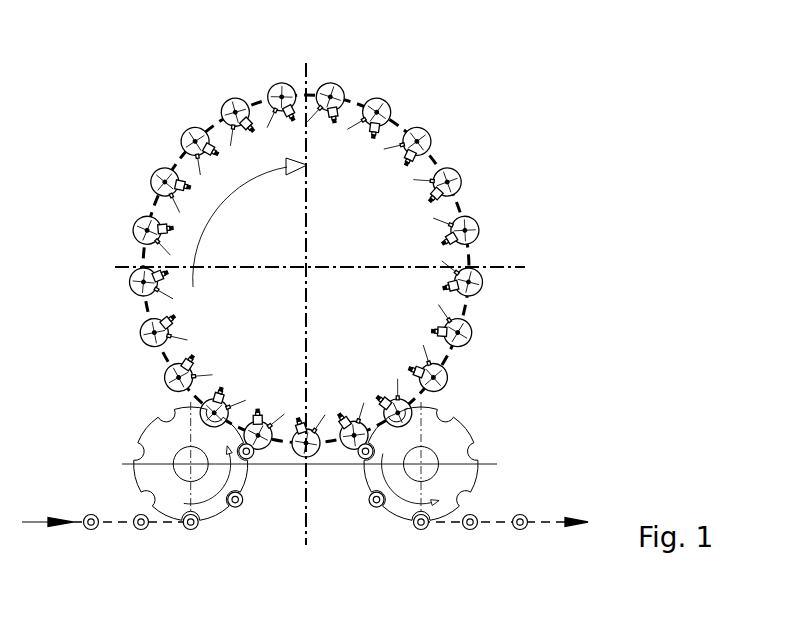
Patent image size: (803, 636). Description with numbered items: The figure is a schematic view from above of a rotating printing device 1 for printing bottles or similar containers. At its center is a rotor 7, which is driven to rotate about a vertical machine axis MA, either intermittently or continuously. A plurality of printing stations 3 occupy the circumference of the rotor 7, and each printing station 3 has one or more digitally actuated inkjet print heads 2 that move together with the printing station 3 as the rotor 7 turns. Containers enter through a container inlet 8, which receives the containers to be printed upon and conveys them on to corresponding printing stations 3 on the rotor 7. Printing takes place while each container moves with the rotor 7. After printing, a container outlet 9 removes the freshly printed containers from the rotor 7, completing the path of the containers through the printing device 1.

The printing device 1 is at (533, 135).
The inkjet print-head 2 is at (420, 368).
The printing station 3 is at (478, 343).
The rotor 7 is at (470, 256).
The container inlet 8 is at (115, 557).
The container outlet 9 is at (508, 558).